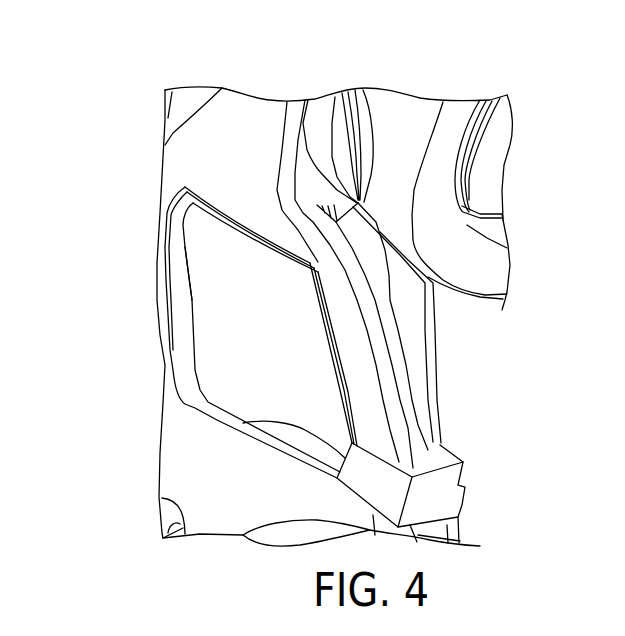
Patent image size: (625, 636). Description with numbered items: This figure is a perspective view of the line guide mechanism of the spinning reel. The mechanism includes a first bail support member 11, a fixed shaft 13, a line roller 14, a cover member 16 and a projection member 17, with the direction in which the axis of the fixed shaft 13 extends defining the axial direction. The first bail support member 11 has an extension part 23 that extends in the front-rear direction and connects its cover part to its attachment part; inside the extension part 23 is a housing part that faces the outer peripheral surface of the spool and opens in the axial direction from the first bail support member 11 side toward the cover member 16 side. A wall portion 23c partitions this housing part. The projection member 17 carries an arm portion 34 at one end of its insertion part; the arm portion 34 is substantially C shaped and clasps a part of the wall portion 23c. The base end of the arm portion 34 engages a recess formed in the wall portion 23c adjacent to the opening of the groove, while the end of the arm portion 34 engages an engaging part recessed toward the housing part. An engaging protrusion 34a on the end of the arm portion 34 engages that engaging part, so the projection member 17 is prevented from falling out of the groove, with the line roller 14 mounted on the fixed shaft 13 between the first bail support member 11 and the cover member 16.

The first bail support member 11 is at (265, 98).
The fixed shaft 13 is at (490, 170).
The line roller 14 is at (371, 90).
The cover member 16 is at (412, 110).
The projection member 17 is at (446, 360).
The extension part 23 is at (166, 292).
The wall portion 23c is at (230, 357).
The arm portion 34 is at (442, 504).
The engaging protrusion 34a is at (267, 420).